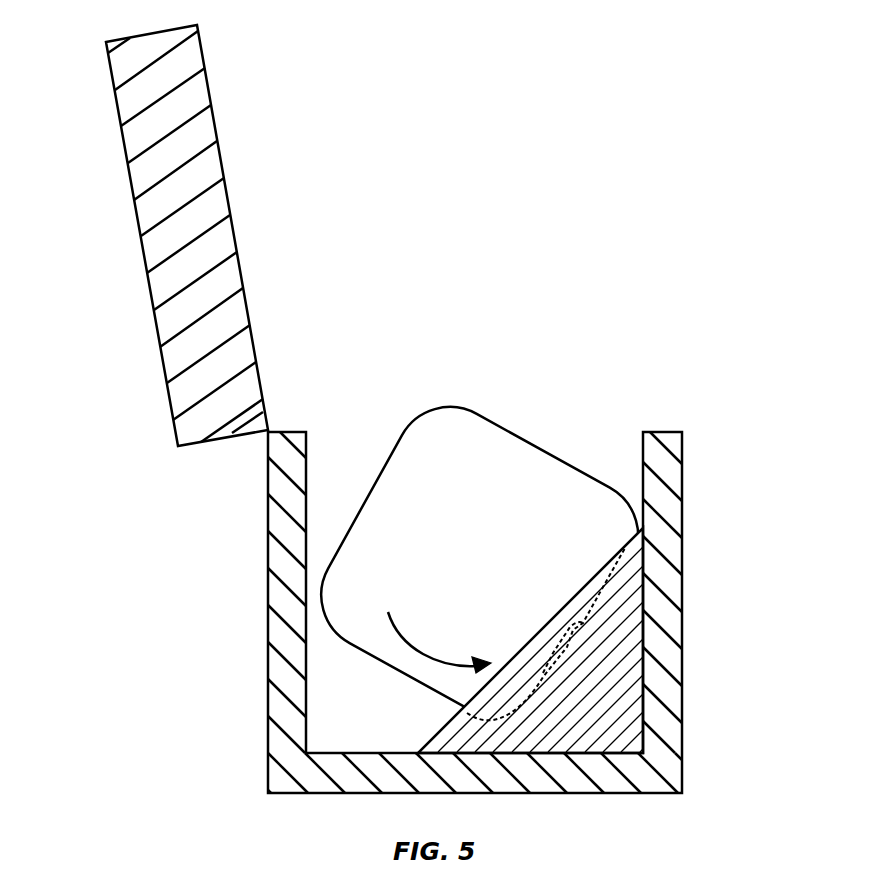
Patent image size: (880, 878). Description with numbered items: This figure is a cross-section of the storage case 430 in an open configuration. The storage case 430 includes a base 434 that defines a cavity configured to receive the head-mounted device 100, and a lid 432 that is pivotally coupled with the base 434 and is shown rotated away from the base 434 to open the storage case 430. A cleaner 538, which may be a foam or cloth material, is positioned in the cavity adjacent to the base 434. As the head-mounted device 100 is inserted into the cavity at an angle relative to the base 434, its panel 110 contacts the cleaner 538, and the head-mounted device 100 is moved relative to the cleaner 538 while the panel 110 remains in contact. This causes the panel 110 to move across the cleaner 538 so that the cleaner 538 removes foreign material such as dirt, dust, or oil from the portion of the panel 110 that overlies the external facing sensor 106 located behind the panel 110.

The storage case 430 is at (380, 409).
The lid 432 is at (224, 178).
The base 434 is at (682, 598).
The cleaner 538 is at (627, 687).
The head-mounted device 100 is at (485, 415).
The external facing sensor 106 is at (543, 672).
The panel 110 is at (560, 673).